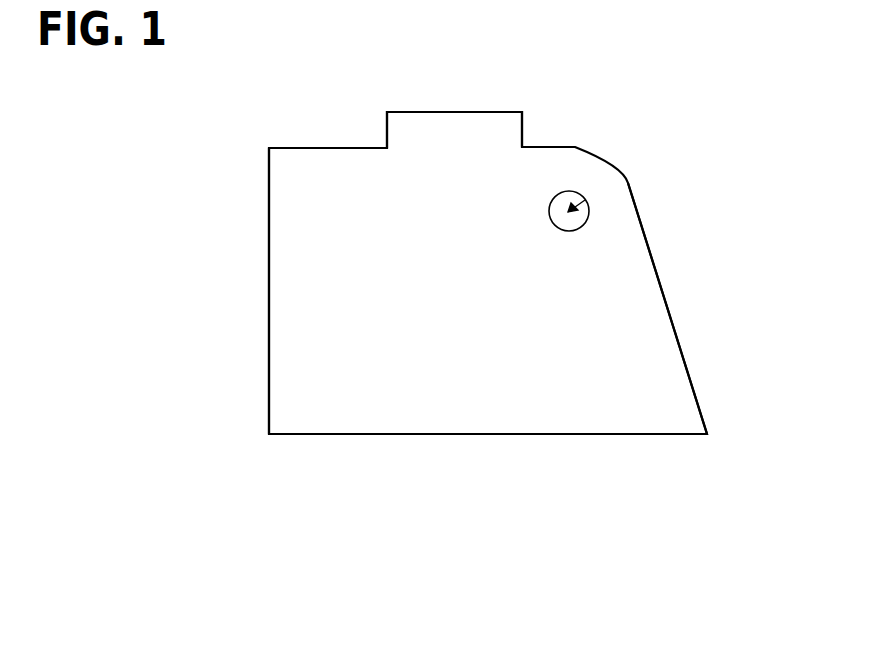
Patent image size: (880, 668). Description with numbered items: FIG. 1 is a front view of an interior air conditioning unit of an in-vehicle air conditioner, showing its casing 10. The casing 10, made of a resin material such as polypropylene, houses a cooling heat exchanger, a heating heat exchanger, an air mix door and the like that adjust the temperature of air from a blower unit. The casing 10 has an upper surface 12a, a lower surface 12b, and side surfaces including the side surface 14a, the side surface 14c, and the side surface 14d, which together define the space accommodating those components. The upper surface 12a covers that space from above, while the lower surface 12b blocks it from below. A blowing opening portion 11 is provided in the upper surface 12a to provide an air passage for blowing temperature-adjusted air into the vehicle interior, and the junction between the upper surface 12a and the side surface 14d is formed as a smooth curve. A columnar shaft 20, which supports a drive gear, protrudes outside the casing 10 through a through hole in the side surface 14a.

The casing 10 is at (268, 382).
The blowing opening portion 11 is at (522, 127).
The upper surface 12a is at (332, 148).
The lower surface 12b is at (405, 434).
The side surface 14a is at (587, 395).
The side surface 14c is at (269, 292).
The side surface 14d is at (668, 300).
The shaft 20 is at (585, 200).